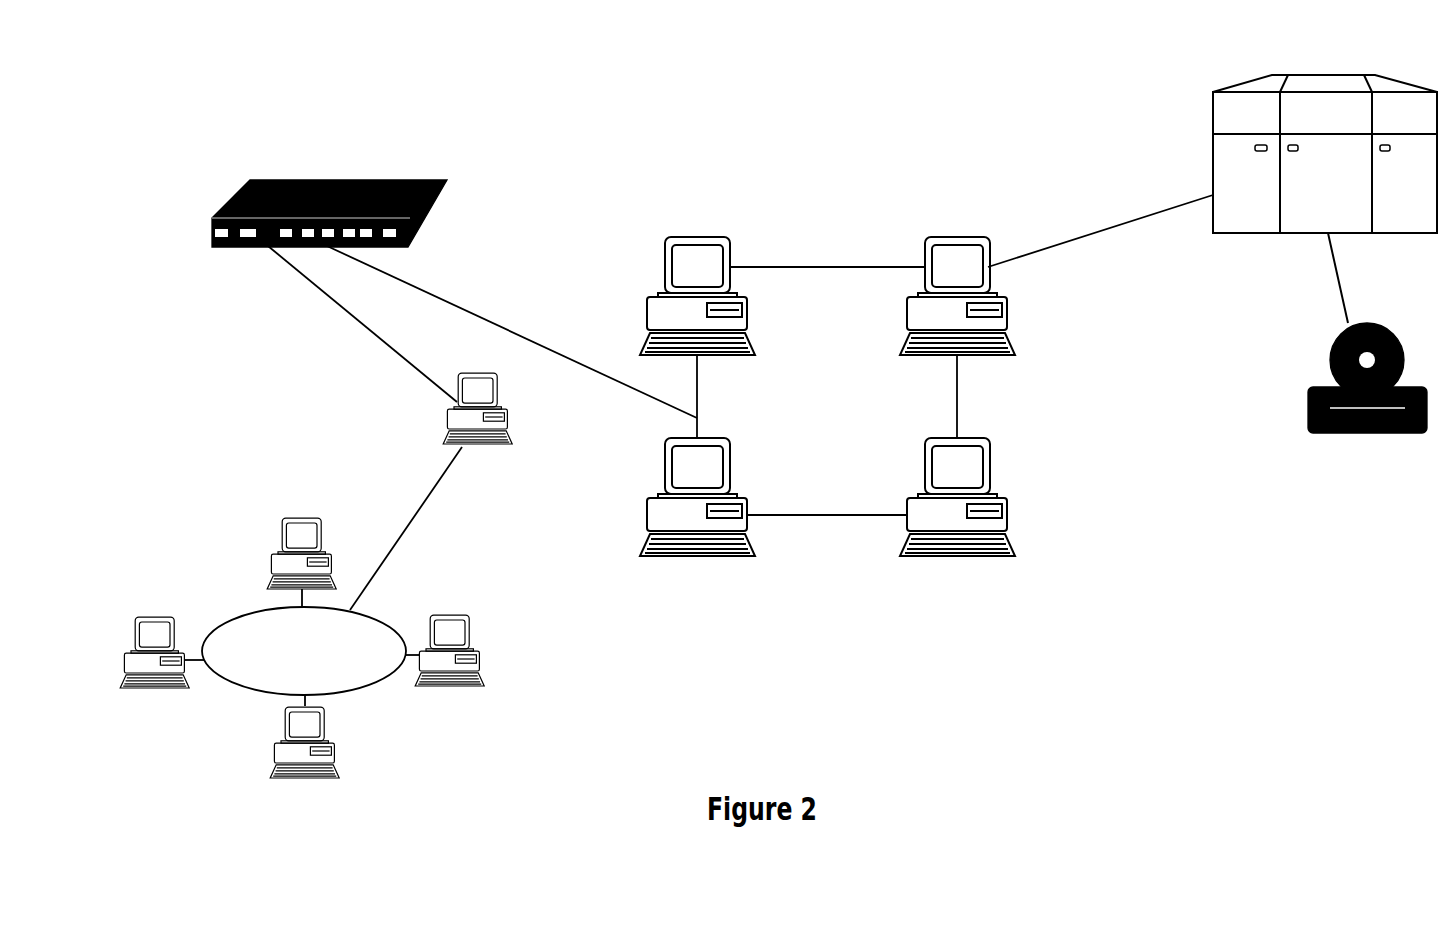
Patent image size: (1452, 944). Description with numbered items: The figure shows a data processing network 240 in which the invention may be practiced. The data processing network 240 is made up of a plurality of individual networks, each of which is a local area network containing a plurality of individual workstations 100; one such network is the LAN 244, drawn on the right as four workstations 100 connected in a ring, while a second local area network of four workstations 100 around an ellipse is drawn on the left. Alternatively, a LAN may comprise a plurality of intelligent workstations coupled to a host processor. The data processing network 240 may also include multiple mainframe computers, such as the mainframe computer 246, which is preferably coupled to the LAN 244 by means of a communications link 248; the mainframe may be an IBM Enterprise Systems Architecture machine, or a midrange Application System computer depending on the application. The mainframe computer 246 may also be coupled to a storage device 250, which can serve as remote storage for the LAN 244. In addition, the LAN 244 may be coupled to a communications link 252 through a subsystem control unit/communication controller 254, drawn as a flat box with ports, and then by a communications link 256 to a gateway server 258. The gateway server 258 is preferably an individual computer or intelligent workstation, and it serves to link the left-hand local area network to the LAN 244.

The workstation 100 is at (652, 297).
The data processing network 240 is at (800, 267).
The LAN 244 is at (827, 435).
The mainframe computer 246 is at (1213, 115).
The communications link 248 is at (1130, 221).
The storage device 250 is at (1305, 408).
The communications link 252 is at (463, 308).
The subsystem control unit/communication controller 254 is at (328, 178).
The communications link 256 is at (331, 298).
The gateway server 258 is at (510, 413).